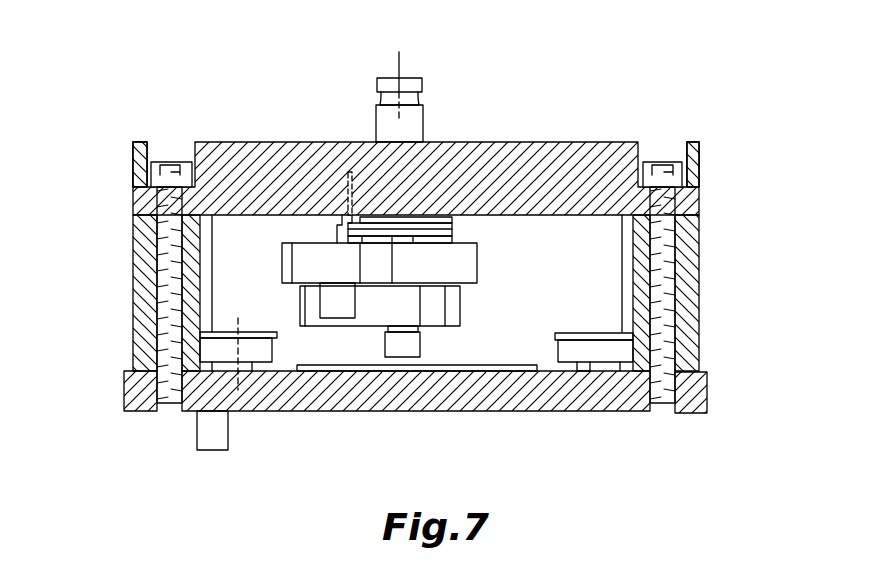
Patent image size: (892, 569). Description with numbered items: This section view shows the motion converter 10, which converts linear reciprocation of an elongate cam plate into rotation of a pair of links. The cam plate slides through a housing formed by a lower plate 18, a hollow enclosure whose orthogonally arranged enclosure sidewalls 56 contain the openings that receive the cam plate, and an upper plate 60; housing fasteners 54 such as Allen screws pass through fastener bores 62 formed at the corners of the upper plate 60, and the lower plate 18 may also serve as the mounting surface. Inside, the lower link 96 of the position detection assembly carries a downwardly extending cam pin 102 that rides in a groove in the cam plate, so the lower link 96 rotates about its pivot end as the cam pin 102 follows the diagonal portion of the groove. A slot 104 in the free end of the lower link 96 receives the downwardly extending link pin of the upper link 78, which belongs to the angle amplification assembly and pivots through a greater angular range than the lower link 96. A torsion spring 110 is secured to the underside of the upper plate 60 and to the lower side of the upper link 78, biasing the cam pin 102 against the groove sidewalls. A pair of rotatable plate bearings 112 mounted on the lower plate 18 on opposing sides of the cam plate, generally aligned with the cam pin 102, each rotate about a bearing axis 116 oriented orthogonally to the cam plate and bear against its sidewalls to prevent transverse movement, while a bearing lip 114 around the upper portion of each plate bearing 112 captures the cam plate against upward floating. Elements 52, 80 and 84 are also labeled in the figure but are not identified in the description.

The motion converter 10 is at (677, 50).
The lower plate 18 is at (707, 393).
The inner side wall 52 is at (157, 275).
The housing fasteners 54 is at (170, 255).
The enclosure sidewalls 56 is at (145, 333).
The upper plate 60 is at (699, 200).
The fastener bore 62 is at (165, 152).
The upper link 78 is at (468, 262).
The feedthrough fitting 80 is at (422, 85).
The feed tube 84 is at (399, 62).
The lower link 96 is at (460, 307).
The cam pin 102 is at (417, 343).
The slot 104 is at (333, 311).
The spring 110 is at (452, 225).
The plate bearings 112 is at (248, 350).
The bearing lip 114 is at (277, 338).
The bearing axis 116 is at (238, 318).